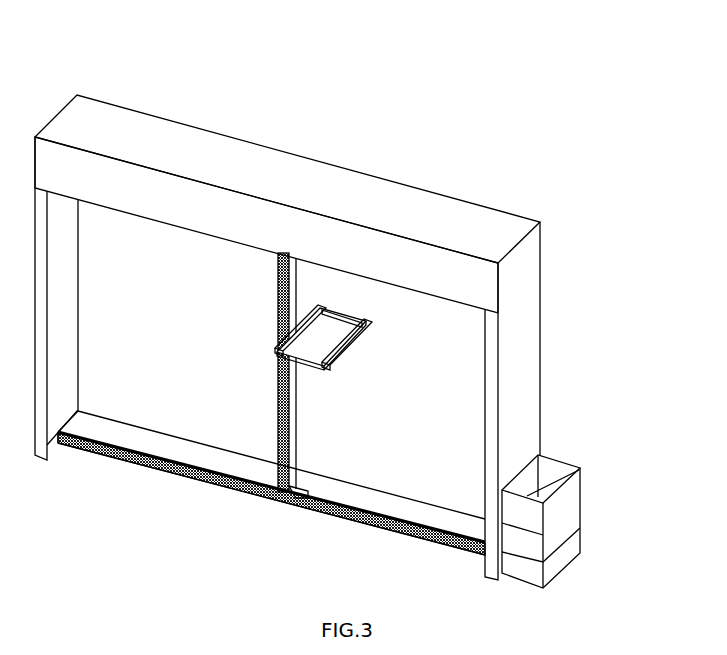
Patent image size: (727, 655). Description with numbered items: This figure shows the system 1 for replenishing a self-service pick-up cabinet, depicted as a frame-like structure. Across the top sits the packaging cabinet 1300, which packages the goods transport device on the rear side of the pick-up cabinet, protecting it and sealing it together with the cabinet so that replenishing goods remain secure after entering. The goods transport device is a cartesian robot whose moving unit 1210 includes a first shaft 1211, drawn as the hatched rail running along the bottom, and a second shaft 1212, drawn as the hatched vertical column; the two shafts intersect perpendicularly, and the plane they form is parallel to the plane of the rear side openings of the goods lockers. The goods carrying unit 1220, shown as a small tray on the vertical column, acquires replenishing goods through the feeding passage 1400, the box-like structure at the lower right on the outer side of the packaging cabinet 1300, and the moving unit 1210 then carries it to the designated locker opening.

The system for replenishing the self-service pick-up cabinet 1 is at (349, 300).
The packaging cabinet 1300 is at (347, 168).
The moving unit 1210 is at (266, 358).
The first shaft 1211 is at (363, 503).
The second shaft 1212 is at (275, 438).
The goods carrying unit 1220 is at (337, 358).
The feeding passage 1400 is at (572, 490).